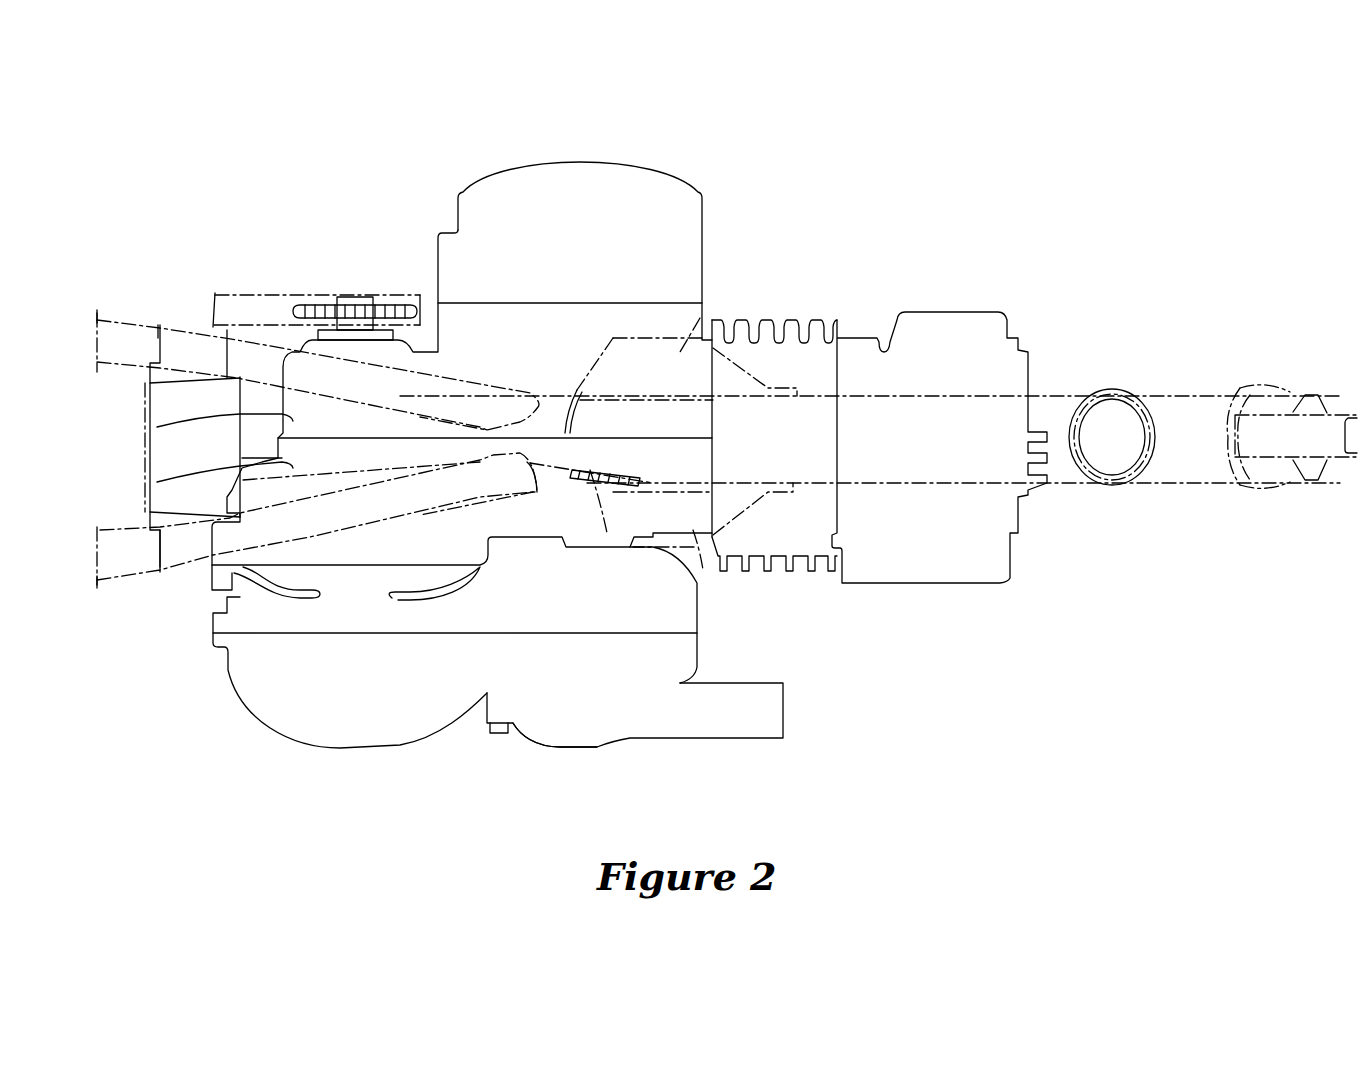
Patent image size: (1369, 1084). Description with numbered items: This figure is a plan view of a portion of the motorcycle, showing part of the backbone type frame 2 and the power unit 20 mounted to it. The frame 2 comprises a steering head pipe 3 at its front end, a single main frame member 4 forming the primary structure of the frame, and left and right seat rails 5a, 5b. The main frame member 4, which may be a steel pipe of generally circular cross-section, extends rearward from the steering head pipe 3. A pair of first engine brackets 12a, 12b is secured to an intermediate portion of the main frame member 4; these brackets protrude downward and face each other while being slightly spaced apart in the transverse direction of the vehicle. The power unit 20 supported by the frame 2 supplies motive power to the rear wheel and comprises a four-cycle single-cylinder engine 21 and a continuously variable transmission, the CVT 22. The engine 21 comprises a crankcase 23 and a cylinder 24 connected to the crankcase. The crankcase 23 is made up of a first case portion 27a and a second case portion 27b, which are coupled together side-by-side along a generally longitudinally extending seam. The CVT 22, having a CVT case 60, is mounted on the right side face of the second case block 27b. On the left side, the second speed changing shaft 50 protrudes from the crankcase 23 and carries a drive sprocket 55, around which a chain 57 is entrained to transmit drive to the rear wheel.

The power unit 20 is at (730, 196).
The four-cycle single-cylinder engine 21 is at (838, 322).
The cylinder 24 is at (820, 540).
The main frame member 4 is at (922, 430).
The frame 2 is at (1052, 395).
The steering head pipe 3 is at (1206, 460).
The first engine bracket 12a is at (680, 352).
The first engine bracket 12b is at (682, 515).
The left seat rail 5a is at (437, 393).
The right seat rail 5b is at (380, 508).
The chain 57 is at (245, 313).
The drive sprocket 55 is at (313, 307).
The second speed changing shaft 50 is at (353, 300).
The crankcase 23 is at (82, 402).
The first case portion 27a is at (160, 426).
The second case portion 27b is at (160, 481).
The continuously variable transmission 22 is at (428, 714).
The CVT case 60 is at (578, 708).